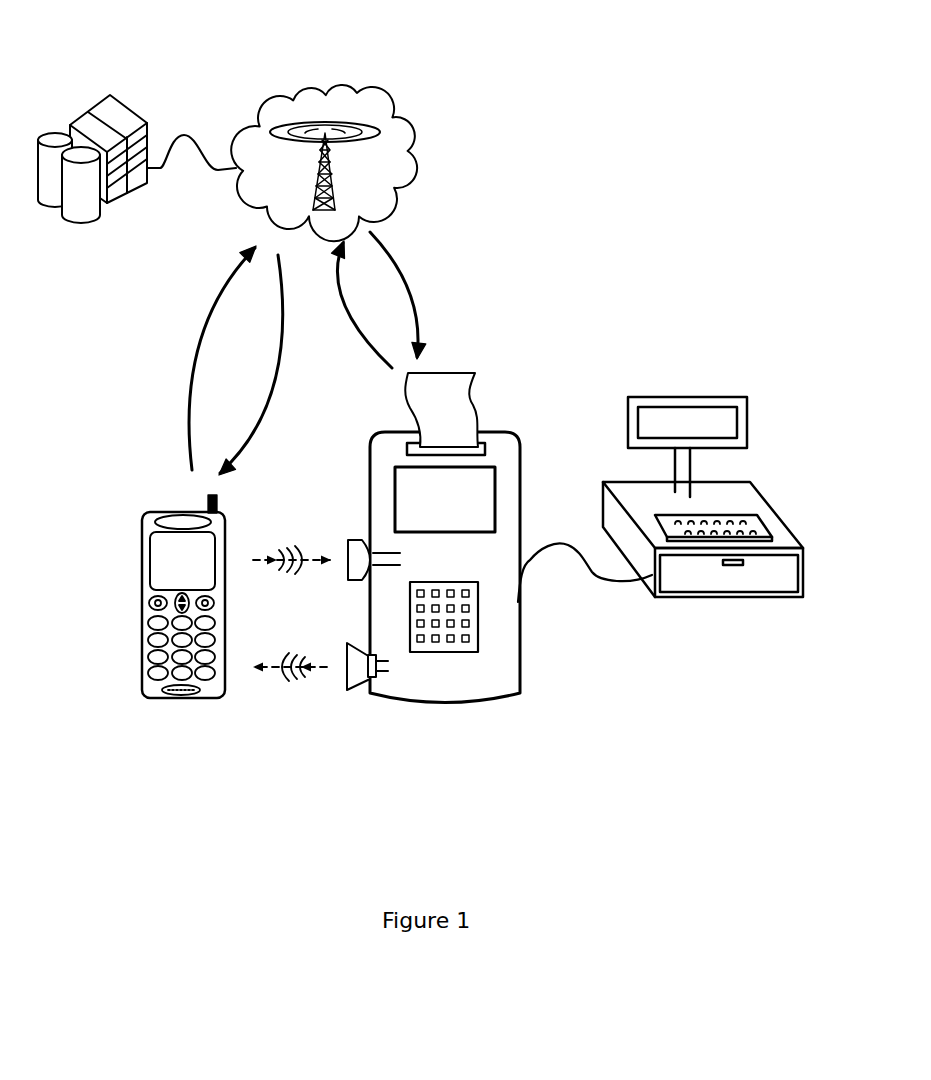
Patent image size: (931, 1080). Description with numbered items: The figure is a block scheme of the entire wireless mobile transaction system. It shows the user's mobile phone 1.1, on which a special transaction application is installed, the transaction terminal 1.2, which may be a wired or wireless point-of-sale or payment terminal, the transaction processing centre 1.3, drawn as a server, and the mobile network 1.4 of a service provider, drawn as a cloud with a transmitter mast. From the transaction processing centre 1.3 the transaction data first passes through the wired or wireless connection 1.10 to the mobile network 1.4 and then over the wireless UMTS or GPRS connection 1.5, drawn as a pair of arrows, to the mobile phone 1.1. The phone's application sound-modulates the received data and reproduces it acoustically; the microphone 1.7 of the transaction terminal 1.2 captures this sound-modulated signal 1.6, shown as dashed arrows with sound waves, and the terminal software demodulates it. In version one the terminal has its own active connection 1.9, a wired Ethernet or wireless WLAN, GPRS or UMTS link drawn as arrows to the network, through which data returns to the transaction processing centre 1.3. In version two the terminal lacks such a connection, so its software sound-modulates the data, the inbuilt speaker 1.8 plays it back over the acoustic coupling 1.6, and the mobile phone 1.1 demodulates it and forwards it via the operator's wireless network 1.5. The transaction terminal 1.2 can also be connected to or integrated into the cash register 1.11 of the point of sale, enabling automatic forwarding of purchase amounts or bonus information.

The mobile phone 1.1 is at (150, 512).
The transaction terminal 1.2 is at (497, 453).
The transaction processing centre 1.3 is at (108, 115).
The mobile network 1.4 is at (377, 105).
The wireless connection 1.5 is at (223, 390).
The sound-modulated signal 1.6 is at (295, 623).
The microphone 1.7 is at (360, 553).
The speaker 1.8 is at (362, 675).
The active connection 1.9 is at (403, 307).
The connection 1.10 is at (192, 135).
The cash register 1.11 is at (758, 505).